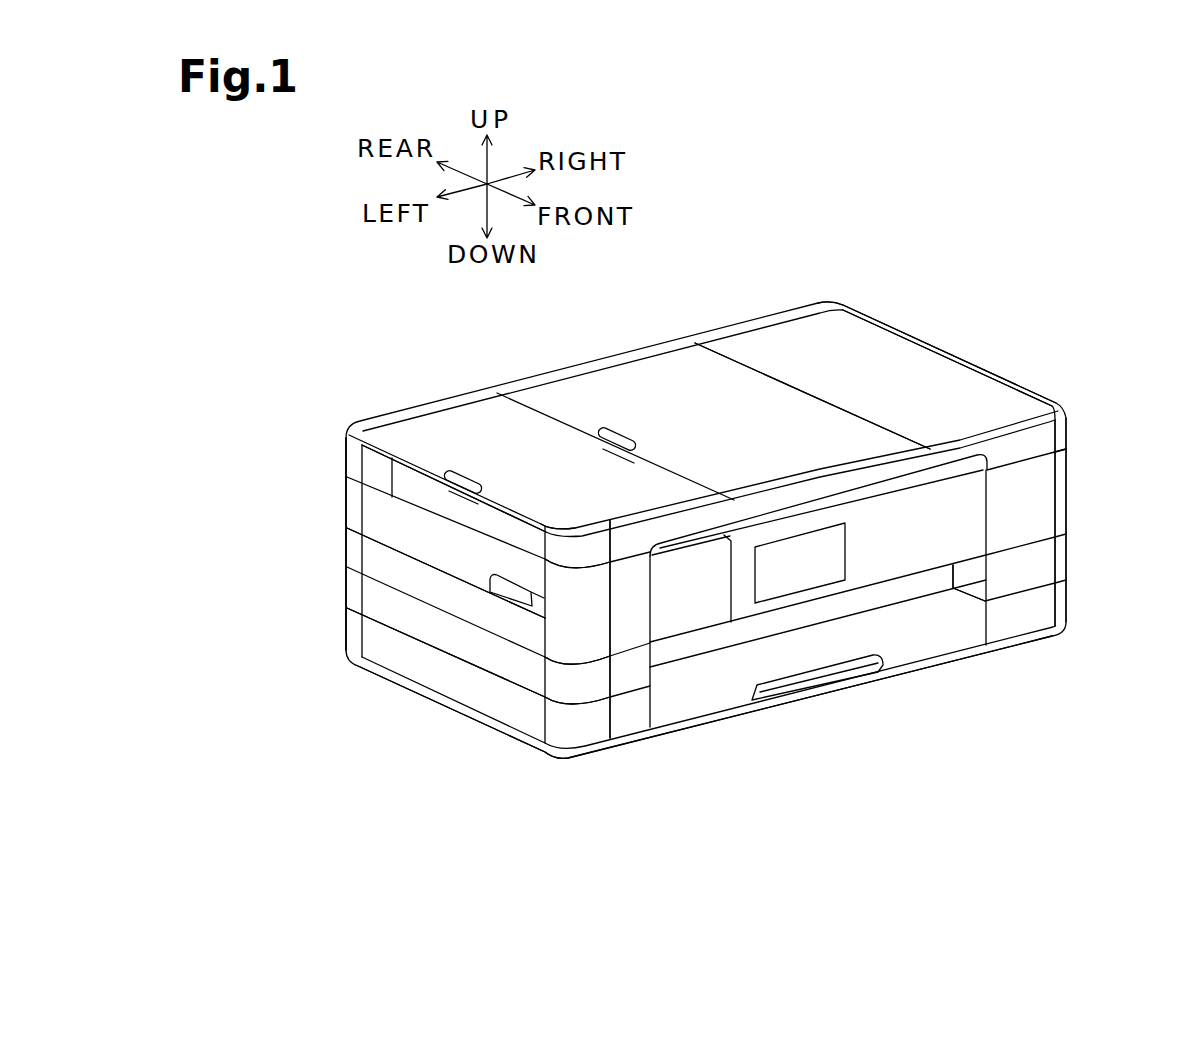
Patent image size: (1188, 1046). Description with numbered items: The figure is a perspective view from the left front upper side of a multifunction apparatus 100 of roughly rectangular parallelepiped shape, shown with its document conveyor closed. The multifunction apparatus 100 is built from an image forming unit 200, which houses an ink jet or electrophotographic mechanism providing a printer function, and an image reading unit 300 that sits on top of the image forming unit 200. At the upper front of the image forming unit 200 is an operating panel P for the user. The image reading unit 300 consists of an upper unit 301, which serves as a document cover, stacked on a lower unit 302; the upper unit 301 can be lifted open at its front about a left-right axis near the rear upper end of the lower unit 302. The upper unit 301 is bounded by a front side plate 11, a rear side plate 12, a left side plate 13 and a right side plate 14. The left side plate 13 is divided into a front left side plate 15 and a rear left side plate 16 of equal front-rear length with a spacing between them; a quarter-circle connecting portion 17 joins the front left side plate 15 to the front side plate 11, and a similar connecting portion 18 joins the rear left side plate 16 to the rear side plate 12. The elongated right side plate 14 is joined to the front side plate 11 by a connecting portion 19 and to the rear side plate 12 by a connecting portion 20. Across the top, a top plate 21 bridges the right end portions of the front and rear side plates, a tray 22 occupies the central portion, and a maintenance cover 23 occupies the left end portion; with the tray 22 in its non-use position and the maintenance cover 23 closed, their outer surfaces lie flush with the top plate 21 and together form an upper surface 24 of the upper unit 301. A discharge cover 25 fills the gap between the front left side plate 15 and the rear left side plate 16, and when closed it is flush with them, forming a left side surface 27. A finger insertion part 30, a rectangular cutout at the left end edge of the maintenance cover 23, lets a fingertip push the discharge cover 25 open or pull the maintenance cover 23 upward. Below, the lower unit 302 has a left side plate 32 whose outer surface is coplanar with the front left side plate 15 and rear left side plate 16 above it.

The multifunction apparatus 100 is at (790, 868).
The front side plate 11 is at (633, 547).
The rear side plate 12 is at (487, 390).
The left side plate 13 is at (478, 529).
The right side plate 14 is at (975, 359).
The front left side plate 15 is at (529, 532).
The rear left side plate 16 is at (380, 460).
The connecting portion 17 is at (571, 540).
The connecting portion 18 is at (351, 455).
The connecting portion 19 is at (1062, 430).
The connecting portion 20 is at (834, 302).
The top plate 21 is at (767, 347).
The tray 22 is at (648, 368).
The maintenance cover 23 is at (433, 423).
The upper surface 24 is at (898, 346).
The discharge cover 25 is at (447, 513).
The left side surface 27 is at (511, 531).
The finger insertion part 30 is at (448, 470).
The left side plate 32 is at (467, 570).
The image forming unit 200 is at (505, 710).
The image reading unit 300 is at (262, 482).
The upper unit 301 is at (372, 469).
The lower unit 302 is at (384, 525).
The operating panel P is at (913, 557).